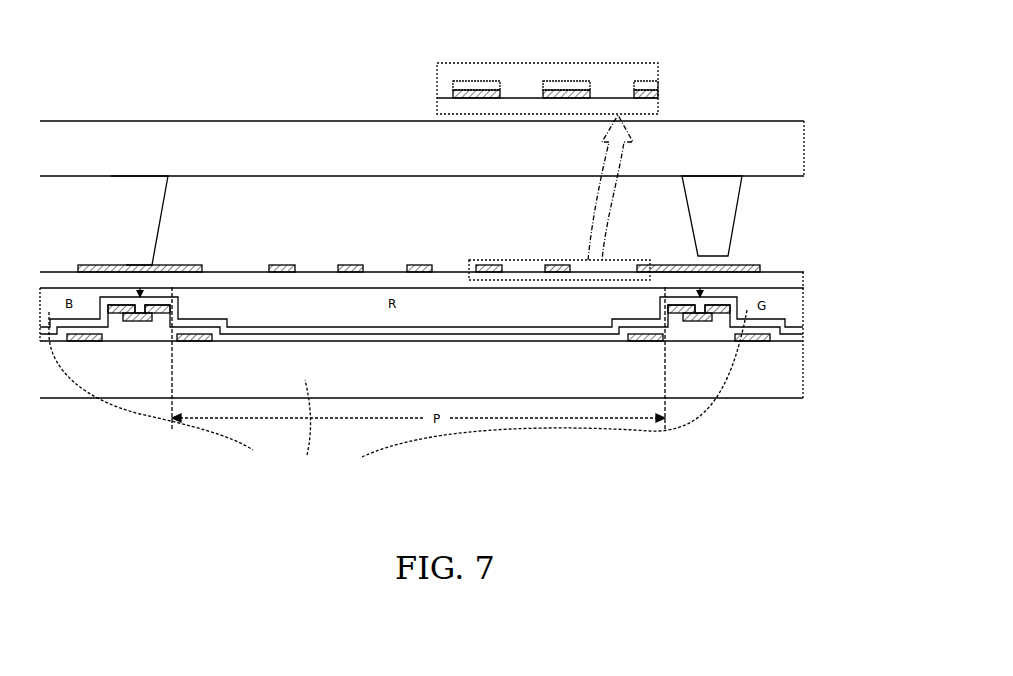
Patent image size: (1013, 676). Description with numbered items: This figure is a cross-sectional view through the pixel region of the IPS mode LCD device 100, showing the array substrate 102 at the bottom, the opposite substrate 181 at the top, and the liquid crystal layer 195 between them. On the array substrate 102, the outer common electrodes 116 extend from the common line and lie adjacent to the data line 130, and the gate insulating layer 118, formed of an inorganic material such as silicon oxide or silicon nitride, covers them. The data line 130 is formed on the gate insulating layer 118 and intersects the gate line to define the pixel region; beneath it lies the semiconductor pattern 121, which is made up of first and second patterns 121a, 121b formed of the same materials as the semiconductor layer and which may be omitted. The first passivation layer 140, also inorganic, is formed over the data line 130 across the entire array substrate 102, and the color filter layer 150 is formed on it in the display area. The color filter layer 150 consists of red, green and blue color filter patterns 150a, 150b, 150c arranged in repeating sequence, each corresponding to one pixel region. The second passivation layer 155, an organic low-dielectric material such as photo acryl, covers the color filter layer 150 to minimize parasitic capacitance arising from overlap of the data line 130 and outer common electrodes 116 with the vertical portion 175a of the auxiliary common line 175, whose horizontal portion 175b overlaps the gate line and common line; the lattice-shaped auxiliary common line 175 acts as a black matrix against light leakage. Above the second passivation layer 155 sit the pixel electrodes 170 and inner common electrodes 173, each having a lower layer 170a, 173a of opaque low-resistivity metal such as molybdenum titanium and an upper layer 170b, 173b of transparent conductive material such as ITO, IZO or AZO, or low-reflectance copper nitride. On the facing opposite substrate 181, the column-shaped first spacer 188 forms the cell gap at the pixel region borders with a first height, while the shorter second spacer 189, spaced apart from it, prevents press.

The IPS mode LCD device 100 is at (777, 98).
The array substrate 102 is at (797, 384).
The outer common electrodes 116 is at (85, 341).
The gate insulating layer 118 is at (385, 334).
The semiconductor pattern 121 is at (421, 350).
The first pattern 121a is at (128, 322).
The second pattern 121b is at (148, 322).
The data line 130 is at (150, 303).
The first passivation layer 140 is at (452, 322).
The color filter layer 150 is at (398, 407).
The red color filter pattern 150a is at (308, 428).
The green color filter pattern 150b is at (542, 393).
The blue color filter pattern 150c is at (159, 391).
The second passivation layer 155 is at (243, 283).
The pixel electrodes 170 is at (283, 265).
The lower layer of pixel electrode 170a is at (583, 92).
The upper layer of pixel electrode 170b is at (557, 82).
The inner common electrodes 173 is at (351, 265).
The lower layer of inner common electrode 173a is at (492, 92).
The upper layer of inner common electrode 173b is at (462, 82).
The auxiliary common line 175 is at (112, 265).
The vertical portion 175a is at (655, 92).
The horizontal portion 175b is at (640, 82).
The opposite substrate 181 is at (800, 154).
The first spacer 188 is at (165, 197).
The second spacer 189 is at (733, 195).
The liquid crystal layer 195 is at (784, 223).